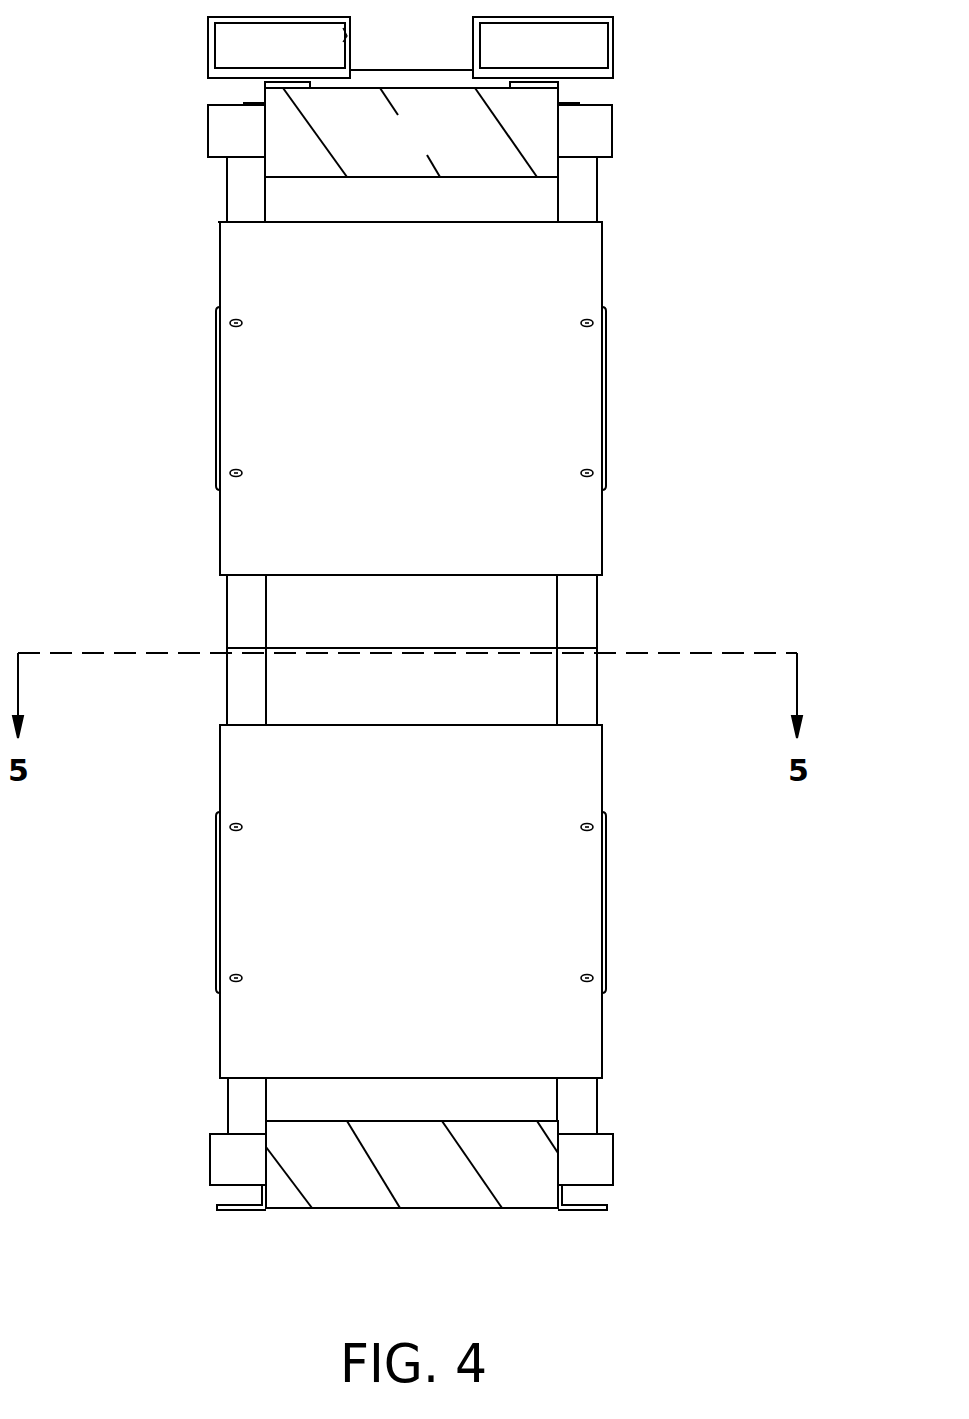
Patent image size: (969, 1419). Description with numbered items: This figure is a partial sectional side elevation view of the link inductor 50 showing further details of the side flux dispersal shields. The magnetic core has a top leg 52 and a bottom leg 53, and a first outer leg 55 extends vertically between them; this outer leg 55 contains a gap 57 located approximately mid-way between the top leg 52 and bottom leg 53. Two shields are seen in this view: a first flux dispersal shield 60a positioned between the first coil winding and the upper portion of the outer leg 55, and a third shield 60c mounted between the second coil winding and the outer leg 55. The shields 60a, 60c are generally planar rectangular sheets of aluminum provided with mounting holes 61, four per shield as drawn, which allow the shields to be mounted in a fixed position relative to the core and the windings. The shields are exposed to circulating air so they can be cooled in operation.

The link inductor 50 is at (824, 28).
The top leg 52 is at (427, 145).
The bottom leg 53 is at (427, 1168).
The first outer leg 55 is at (426, 631).
The gap 57 is at (580, 646).
The first flux dispersal shield 60a is at (220, 267).
The third shield 60c is at (220, 779).
The mounting holes 61 is at (252, 336).